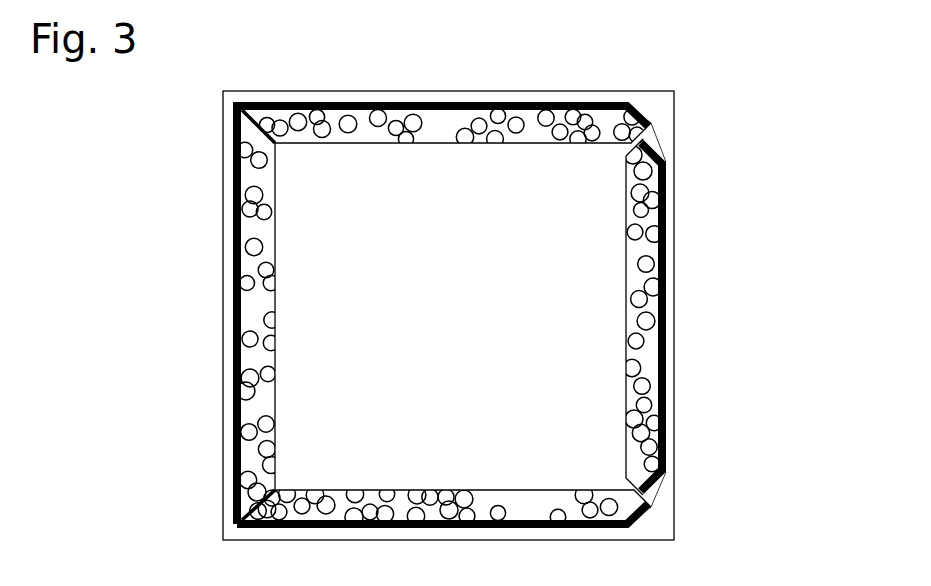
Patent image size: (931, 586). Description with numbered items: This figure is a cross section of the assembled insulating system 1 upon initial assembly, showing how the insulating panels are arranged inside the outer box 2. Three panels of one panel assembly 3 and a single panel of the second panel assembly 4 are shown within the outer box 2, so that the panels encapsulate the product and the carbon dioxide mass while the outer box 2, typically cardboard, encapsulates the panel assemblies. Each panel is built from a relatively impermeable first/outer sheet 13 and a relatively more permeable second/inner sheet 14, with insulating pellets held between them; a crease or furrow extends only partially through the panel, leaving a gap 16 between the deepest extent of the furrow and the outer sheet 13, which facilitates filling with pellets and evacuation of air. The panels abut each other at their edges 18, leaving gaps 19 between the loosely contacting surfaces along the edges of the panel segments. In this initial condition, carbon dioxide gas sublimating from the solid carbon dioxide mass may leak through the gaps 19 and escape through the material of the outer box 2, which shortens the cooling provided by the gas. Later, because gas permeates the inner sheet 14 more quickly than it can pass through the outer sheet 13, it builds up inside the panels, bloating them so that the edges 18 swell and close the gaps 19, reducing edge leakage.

The frame profile 1 is at (468, 317).
The outer box 2 is at (223, 310).
The panel assembly 3 is at (233, 250).
The second panel assembly 4 is at (667, 360).
The first/outer sheet 13 is at (451, 315).
The second/inner sheet 14 is at (275, 332).
The gap 16 is at (630, 150).
The edges 18 is at (650, 124).
The gaps 19 is at (666, 124).